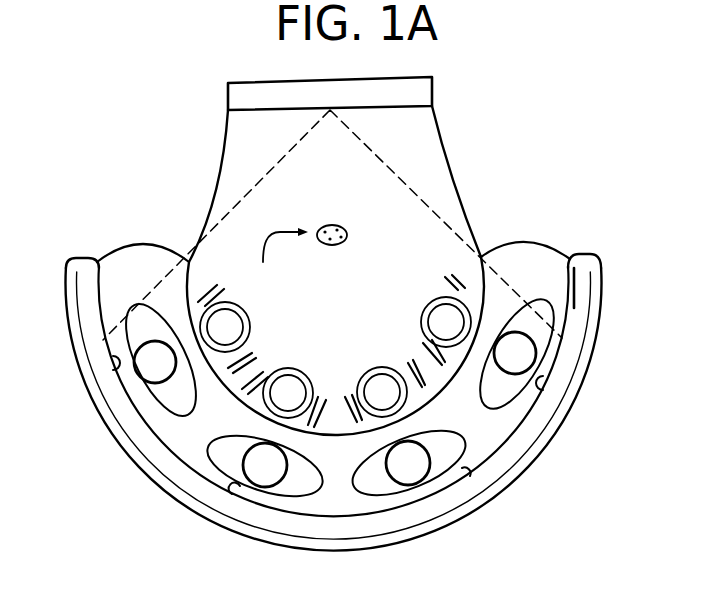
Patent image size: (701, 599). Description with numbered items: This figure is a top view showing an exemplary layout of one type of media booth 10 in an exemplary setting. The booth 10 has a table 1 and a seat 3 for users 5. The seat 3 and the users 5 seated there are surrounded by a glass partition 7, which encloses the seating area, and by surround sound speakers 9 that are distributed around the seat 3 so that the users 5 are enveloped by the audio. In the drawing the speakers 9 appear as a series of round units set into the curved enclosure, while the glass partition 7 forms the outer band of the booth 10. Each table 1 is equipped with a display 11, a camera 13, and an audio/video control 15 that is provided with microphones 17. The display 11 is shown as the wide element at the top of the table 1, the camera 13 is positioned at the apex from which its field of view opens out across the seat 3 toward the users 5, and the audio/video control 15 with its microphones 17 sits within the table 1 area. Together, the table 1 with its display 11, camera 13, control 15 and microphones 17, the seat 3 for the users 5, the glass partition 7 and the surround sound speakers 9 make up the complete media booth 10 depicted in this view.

The table 1 is at (428, 160).
The seat 3 is at (527, 250).
The users 5 is at (531, 307).
The glass partition 7 is at (135, 440).
The surround sound speakers 9 is at (117, 377).
The booth 10 is at (586, 126).
The display 11 is at (228, 84).
The camera 13 is at (330, 110).
The audio/video control 15 is at (282, 257).
The microphones 17 is at (346, 229).